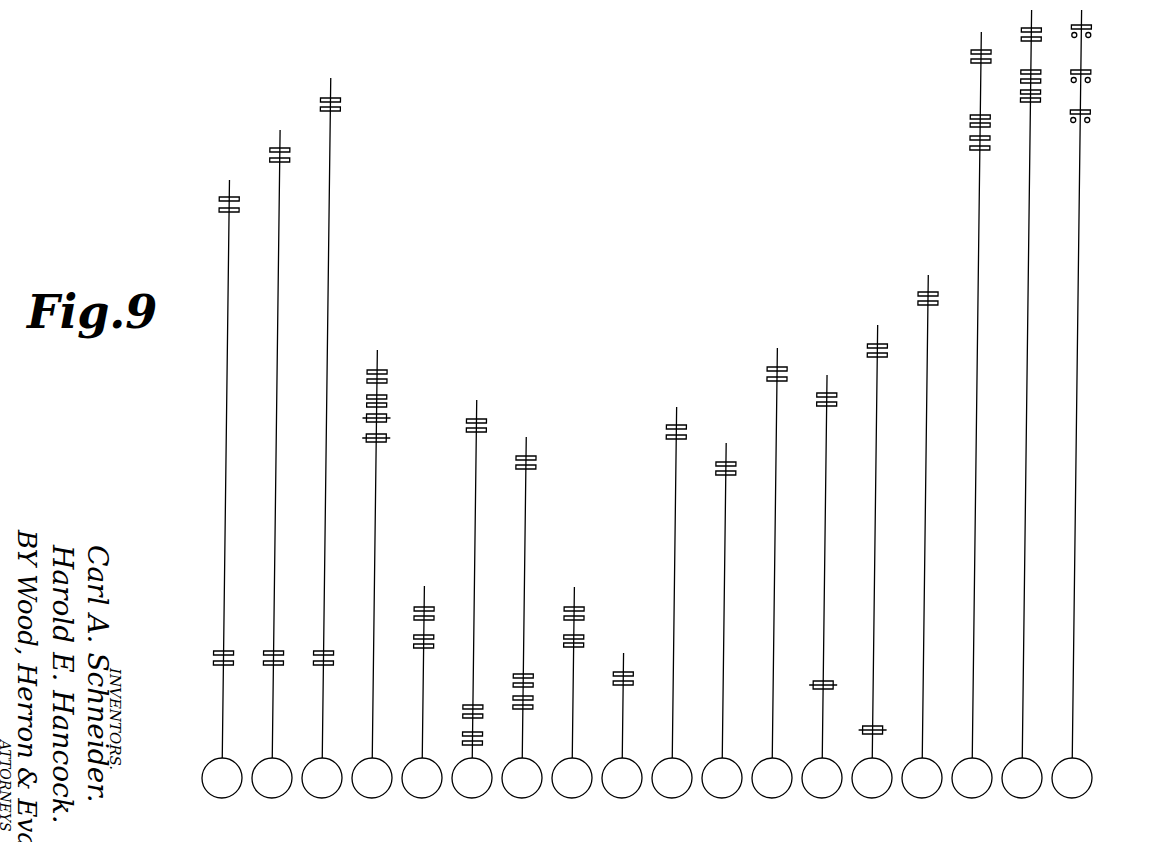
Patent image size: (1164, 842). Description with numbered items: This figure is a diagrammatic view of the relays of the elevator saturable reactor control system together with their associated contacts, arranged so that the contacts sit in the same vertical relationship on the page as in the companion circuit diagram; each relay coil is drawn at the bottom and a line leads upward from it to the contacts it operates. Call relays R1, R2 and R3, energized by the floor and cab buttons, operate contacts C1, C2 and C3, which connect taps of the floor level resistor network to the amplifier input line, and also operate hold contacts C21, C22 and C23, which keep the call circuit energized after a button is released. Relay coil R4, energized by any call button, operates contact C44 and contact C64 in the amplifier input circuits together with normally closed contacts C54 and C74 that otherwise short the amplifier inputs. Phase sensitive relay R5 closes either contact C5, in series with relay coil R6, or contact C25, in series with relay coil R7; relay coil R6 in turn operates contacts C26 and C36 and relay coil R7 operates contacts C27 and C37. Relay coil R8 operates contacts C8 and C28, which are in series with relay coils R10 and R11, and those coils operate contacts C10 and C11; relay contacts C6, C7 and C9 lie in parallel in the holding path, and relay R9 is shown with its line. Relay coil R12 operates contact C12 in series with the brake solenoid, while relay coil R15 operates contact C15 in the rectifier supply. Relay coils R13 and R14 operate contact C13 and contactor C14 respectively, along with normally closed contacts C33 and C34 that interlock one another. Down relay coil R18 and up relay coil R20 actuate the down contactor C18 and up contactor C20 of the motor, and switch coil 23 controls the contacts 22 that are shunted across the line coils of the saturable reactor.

The contact C1 is at (225, 196).
The contact C2 is at (275, 147).
The contact C3 is at (325, 97).
The contact C5 is at (425, 606).
The relay contact C6 is at (475, 731).
The relay contact C7 is at (525, 695).
The contact C8 is at (575, 606).
The relay contact C9 is at (625, 671).
The contact C10 is at (675, 424).
The contact C11 is at (725, 461).
The contact C12 is at (775, 366).
The contact C13 is at (825, 392).
The contactor C14 is at (875, 343).
The contact C15 is at (925, 291).
The down contactor C18 is at (975, 49).
The up contactor C20 is at (1025, 27).
The hold contact C21 is at (225, 650).
The hold contact C22 is at (275, 650).
The hold contact C23 is at (325, 650).
The contact C25 is at (425, 634).
The contact C26 is at (475, 704).
The contact C27 is at (525, 673).
The contact C28 is at (575, 634).
The normally closed contact C33 is at (825, 680).
The normally closed contact C34 is at (875, 725).
The contact C36 is at (475, 418).
The contact C37 is at (525, 455).
The contact C44 is at (375, 369).
The normally closed contact C54 is at (375, 413).
The contact C64 is at (375, 394).
The normally closed contact C74 is at (375, 433).
The contacts 22 is at (1084, 27).
The switch coil 23 is at (1072, 778).
The relay R1 is at (222, 778).
The relay R2 is at (272, 778).
The relay R3 is at (322, 778).
The relay coil R4 is at (372, 778).
The phase sensitive relay R5 is at (422, 778).
The relay coil R6 is at (472, 778).
The relay coil R7 is at (522, 778).
The relay coil R8 is at (572, 778).
The relay terminal R9 is at (622, 778).
The relay coil R10 is at (672, 778).
The relay coil R11 is at (722, 778).
The relay coil R12 is at (772, 778).
The relay coil R13 is at (822, 778).
The relay coil R14 is at (872, 778).
The relay coil R15 is at (922, 778).
The down relay coil R18 is at (972, 778).
The up relay coil R20 is at (1022, 778).